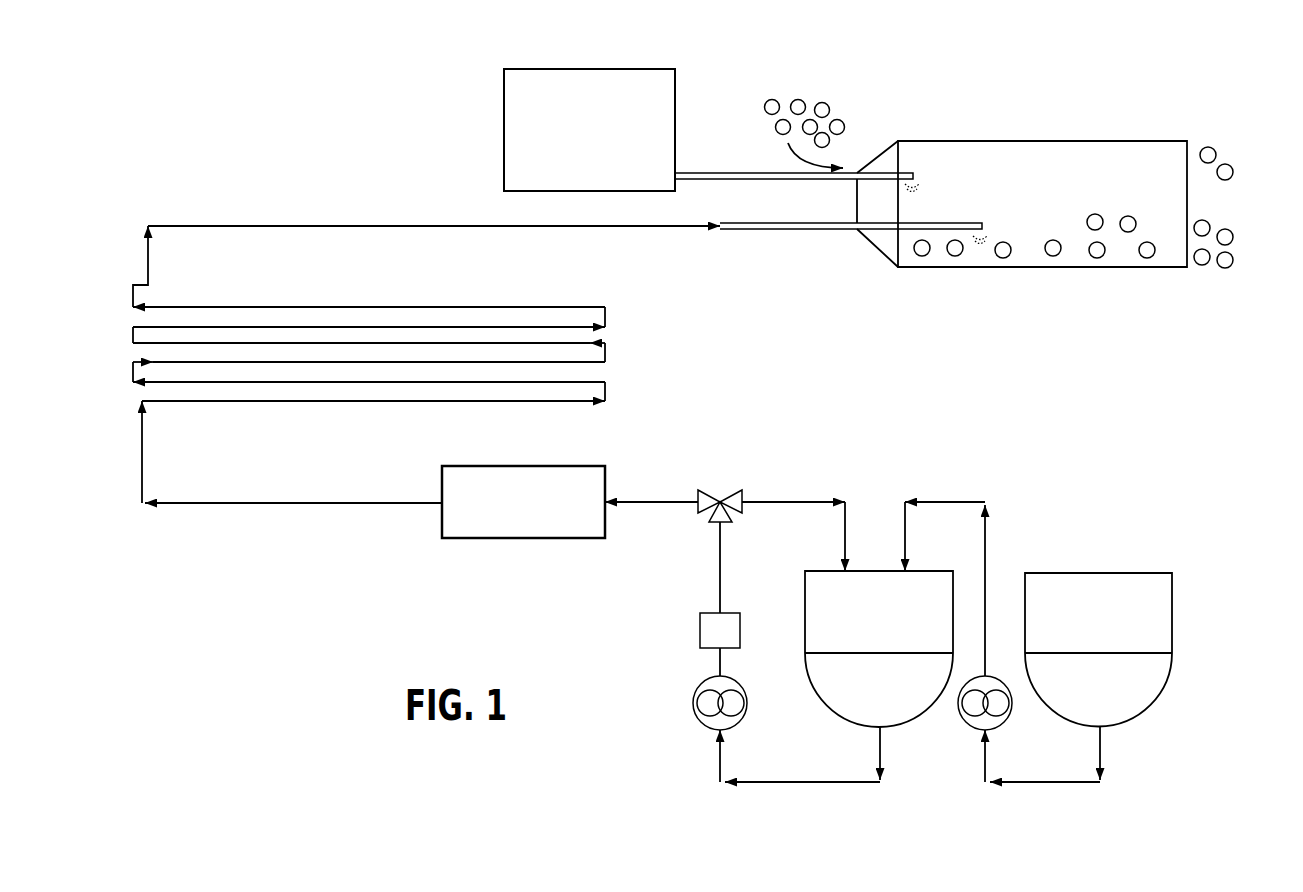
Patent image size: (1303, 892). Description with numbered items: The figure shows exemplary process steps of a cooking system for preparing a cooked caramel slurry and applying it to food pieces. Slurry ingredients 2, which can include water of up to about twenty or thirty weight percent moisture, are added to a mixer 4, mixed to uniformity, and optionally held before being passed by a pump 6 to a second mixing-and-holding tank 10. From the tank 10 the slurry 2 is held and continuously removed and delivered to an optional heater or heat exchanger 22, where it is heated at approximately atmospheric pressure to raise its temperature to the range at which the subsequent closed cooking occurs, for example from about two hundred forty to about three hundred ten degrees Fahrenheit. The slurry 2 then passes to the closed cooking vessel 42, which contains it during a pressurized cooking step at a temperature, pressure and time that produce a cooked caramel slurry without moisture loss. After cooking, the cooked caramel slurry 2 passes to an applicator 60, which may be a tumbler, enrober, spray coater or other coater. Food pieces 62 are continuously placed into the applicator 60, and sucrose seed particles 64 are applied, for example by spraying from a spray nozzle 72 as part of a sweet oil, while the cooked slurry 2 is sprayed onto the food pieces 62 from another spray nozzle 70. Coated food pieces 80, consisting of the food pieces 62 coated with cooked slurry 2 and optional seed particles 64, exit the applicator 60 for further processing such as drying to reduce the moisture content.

The slurry ingredients 2 is at (758, 210).
The mixer 4 is at (1145, 725).
The pump 6 is at (1008, 722).
The mixing-and-holding tank 10 is at (902, 703).
The heat exchanger 22 is at (515, 465).
The closed cooking vessel 42 is at (333, 307).
The applicator 60 is at (975, 153).
The food pieces 62 is at (842, 120).
The sucrose seed particles 64 is at (685, 158).
The spray nozzle 70 is at (992, 223).
The spray nozzle 72 is at (915, 178).
The coated food pieces 80 is at (1197, 197).